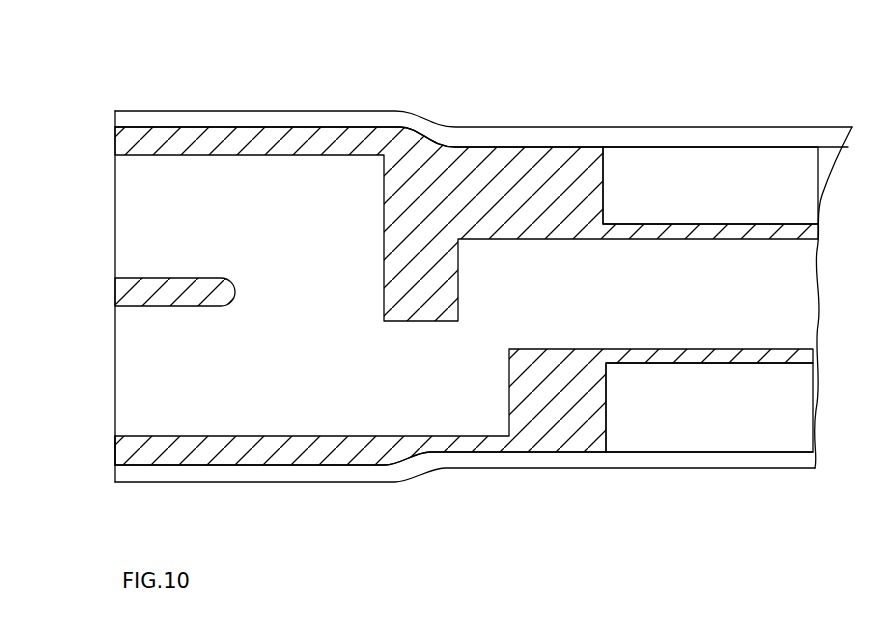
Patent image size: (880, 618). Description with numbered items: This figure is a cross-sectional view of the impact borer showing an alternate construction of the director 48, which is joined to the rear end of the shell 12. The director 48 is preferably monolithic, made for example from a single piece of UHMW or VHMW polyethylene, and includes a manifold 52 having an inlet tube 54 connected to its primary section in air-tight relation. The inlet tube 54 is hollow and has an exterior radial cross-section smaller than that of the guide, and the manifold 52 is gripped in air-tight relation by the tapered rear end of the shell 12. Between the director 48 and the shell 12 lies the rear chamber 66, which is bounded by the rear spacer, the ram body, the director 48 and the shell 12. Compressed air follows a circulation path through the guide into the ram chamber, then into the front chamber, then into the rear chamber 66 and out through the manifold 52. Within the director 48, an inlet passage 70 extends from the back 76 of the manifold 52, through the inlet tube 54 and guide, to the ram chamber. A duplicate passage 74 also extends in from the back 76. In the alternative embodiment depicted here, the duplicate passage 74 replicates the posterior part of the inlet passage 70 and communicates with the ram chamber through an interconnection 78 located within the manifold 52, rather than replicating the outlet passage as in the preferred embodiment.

The shell 12 is at (308, 111).
The director 48 is at (563, 98).
The manifold 52 is at (248, 465).
The inlet tube 54 is at (698, 224).
The rear chamber 66 is at (766, 200).
The inlet passage 70 is at (787, 296).
The duplicate passage 74 is at (142, 195).
The back 76 is at (115, 450).
The interconnection 78 is at (264, 281).